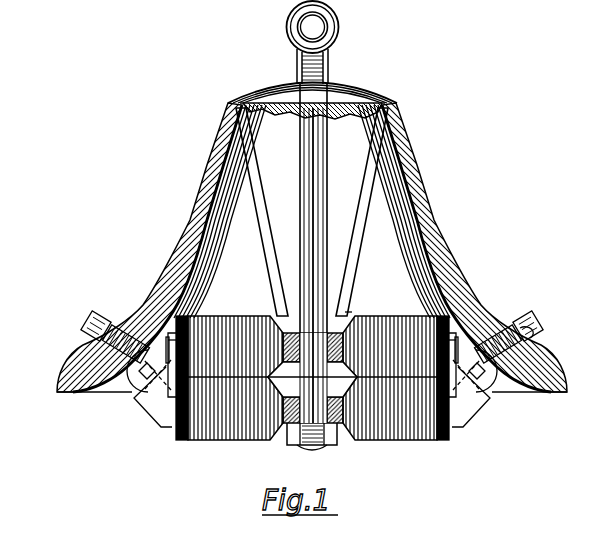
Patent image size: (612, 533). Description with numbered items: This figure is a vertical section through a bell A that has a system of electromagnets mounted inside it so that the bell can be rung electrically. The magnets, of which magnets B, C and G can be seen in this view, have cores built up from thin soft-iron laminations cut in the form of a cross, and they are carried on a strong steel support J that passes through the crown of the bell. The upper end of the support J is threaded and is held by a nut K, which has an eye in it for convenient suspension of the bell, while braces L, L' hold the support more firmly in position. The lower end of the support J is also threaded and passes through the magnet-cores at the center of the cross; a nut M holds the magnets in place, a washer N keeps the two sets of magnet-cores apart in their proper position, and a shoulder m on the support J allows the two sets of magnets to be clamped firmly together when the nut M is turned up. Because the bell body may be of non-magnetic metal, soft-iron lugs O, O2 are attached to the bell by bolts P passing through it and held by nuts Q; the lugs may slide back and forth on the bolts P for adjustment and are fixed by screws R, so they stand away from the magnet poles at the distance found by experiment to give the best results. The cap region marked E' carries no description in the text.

The nut K is at (333, 55).
The cap E' is at (312, 197).
The bell A is at (312, 247).
The magnet B is at (312, 211).
The brace L is at (262, 212).
The brace L' is at (362, 212).
The steel support J is at (322, 210).
The magnet C is at (233, 434).
The magnet G is at (416, 434).
The nut M is at (330, 442).
The washer N is at (271, 434).
The screw R is at (312, 380).
The lug O is at (132, 400).
The lug O2 is at (491, 393).
The bolt P is at (128, 314).
The nut Q is at (522, 332).
The shoulder m is at (355, 307).